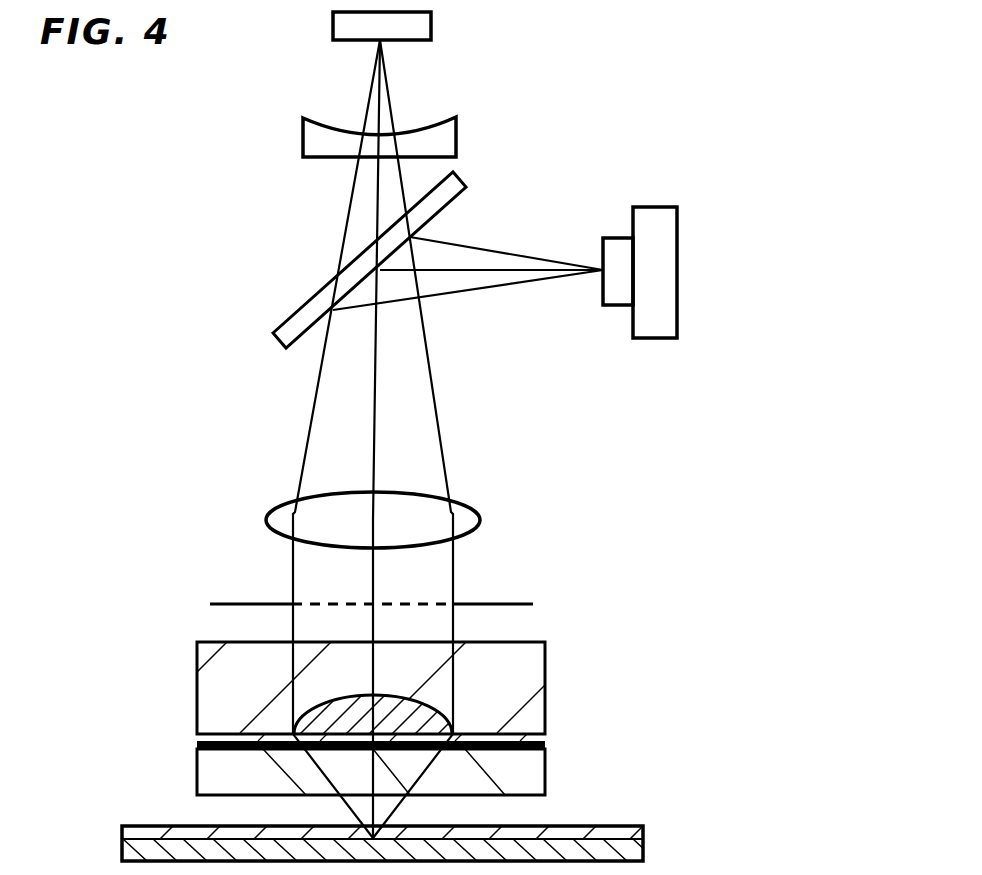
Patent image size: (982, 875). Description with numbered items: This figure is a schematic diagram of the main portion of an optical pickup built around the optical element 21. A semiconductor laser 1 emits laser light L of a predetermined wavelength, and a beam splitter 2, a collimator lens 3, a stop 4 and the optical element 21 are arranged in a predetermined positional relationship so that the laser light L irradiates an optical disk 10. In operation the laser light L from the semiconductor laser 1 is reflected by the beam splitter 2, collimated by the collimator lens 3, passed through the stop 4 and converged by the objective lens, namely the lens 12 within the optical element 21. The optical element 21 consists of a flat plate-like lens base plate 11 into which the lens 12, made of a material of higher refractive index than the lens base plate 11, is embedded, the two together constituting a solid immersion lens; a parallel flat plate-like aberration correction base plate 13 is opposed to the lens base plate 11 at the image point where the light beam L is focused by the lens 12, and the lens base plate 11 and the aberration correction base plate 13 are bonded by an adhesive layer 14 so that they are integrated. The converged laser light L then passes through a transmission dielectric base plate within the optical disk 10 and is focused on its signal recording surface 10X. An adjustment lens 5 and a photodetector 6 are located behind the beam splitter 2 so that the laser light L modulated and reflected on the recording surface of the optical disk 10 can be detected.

The semiconductor laser 1 is at (653, 332).
The beam splitter 2 is at (313, 308).
The collimator lens 3 is at (278, 508).
The stop 4 is at (232, 604).
The adjustment lens 5 is at (305, 140).
The photodetector 6 is at (433, 22).
The laser light (light beam) L is at (433, 385).
The optical disk 10 is at (435, 812).
The signal recording surface 10X is at (615, 833).
The lens base plate 11 is at (530, 665).
The lens 12 is at (423, 730).
The aberration correction base plate 13 is at (410, 772).
The adhesive layer 14 is at (525, 743).
The optical element 21 is at (442, 718).